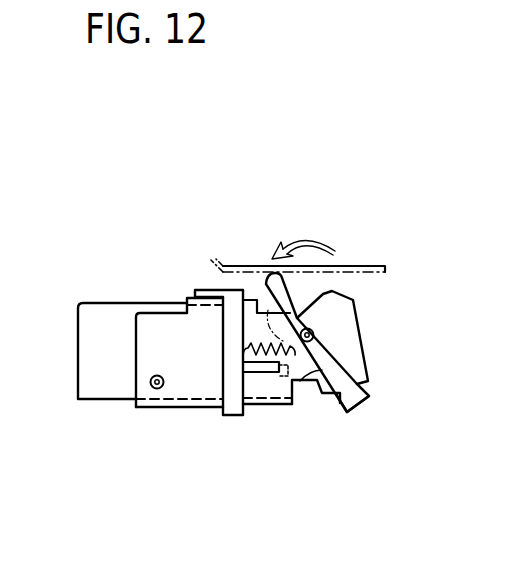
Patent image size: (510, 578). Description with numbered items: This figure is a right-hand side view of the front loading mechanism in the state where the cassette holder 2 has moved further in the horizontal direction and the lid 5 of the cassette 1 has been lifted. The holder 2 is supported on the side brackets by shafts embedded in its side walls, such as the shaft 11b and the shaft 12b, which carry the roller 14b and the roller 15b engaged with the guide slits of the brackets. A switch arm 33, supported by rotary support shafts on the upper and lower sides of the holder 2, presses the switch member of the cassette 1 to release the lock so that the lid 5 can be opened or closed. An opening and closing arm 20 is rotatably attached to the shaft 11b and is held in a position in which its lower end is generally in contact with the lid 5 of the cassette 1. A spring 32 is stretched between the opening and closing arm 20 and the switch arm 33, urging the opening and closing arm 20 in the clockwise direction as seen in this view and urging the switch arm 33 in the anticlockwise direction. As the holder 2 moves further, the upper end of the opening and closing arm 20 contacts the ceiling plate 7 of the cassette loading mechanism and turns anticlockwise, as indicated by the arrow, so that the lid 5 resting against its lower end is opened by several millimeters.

The cassette 1 is at (123, 302).
The cassette holder 2 is at (190, 407).
The lid 5 is at (353, 298).
The ceiling plate 7 is at (235, 263).
The shaft 11b is at (325, 320).
The shaft 12b is at (150, 383).
The roller 14b is at (156, 389).
The roller 15b is at (314, 336).
The opening and closing arm 20 is at (370, 397).
The spring 32 is at (298, 345).
The switch arm 33 is at (232, 415).